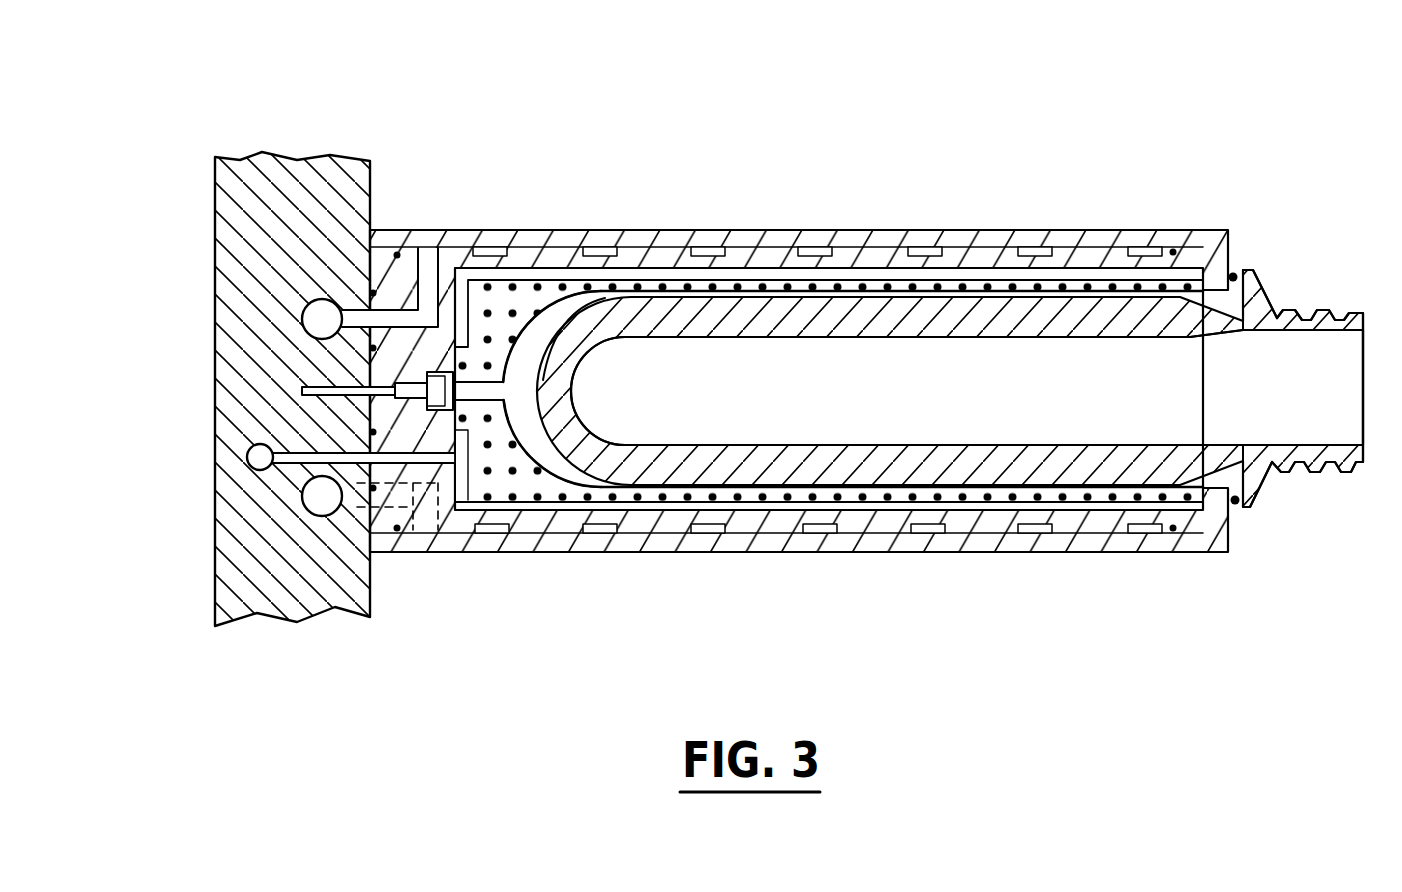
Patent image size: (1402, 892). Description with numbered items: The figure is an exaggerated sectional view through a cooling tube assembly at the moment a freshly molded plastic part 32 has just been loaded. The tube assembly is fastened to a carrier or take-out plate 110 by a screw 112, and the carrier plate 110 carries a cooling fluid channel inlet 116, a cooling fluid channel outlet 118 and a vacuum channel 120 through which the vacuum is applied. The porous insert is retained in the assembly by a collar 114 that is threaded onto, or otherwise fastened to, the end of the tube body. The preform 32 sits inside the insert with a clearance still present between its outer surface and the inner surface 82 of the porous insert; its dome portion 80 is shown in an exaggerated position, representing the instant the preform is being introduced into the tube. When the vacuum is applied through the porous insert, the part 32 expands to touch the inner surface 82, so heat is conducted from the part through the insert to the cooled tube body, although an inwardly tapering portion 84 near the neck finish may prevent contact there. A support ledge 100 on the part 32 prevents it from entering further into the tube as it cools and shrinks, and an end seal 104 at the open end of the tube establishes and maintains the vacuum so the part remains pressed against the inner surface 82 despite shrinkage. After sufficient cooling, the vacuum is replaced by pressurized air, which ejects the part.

The carrier or take-out plate 110 is at (250, 188).
The cooling fluid channel inlet 116 is at (322, 319).
The cooling fluid channel outlet 118 is at (326, 500).
The vacuum channel 120 is at (258, 458).
The screw 112 is at (454, 388).
The inner surface of the porous insert 82 is at (640, 297).
The molded plastic part 32 is at (874, 310).
The dome portion 80 is at (575, 365).
The collar 114 is at (1224, 229).
The end seal 104 is at (1233, 277).
The inwardly tapering portion 84 is at (1262, 290).
The support ledge 100 is at (1253, 480).